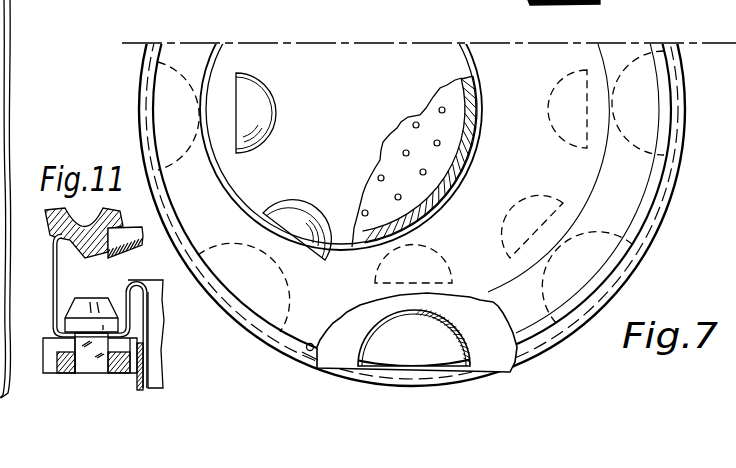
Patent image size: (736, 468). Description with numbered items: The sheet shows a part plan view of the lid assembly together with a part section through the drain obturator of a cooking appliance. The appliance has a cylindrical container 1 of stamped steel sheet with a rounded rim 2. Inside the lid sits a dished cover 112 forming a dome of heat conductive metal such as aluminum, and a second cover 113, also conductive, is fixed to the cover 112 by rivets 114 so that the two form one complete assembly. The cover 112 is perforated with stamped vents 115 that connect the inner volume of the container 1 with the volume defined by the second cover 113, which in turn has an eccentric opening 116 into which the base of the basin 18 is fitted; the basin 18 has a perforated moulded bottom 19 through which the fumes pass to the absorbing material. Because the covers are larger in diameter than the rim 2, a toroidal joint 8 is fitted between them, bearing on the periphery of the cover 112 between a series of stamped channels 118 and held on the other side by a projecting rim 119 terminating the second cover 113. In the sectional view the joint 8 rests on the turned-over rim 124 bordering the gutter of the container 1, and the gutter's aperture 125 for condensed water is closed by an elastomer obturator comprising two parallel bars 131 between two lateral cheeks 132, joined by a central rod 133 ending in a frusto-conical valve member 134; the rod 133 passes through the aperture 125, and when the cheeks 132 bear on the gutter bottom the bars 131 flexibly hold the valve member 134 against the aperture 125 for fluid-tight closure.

In FIG. 11, the container 1 is at (0, 62).
In FIG. 11, the rim 2 is at (150, 293).
In FIG. 11, the toroidal joint 8 is at (45, 214).
In FIG. 7, the basin 18 is at (473, 135).
In FIG. 7, the perforated moulded bottom 19 is at (408, 138).
In FIG. 7, the dished cover 112 is at (480, 338).
In FIG. 7, the second cover 113 is at (613, 200).
In FIG. 7, the rivets 114 is at (302, 350).
In FIG. 7, the vents 115 is at (258, 108).
In FIG. 7, the eccentric opening 116 is at (478, 85).
In FIG. 7, the channels 118 is at (393, 355).
In FIG. 7, the projecting rim 119 is at (668, 137).
In FIG. 11, the turned-over rim 124 is at (56, 240).
In FIG. 11, the aperture 125 is at (113, 340).
In FIG. 11, the parallel bars 131 is at (118, 368).
In FIG. 11, the lateral cheeks 132 is at (48, 362).
In FIG. 11, the central rod 133 is at (92, 358).
In FIG. 11, the frusto-conical valve member 134 is at (77, 308).